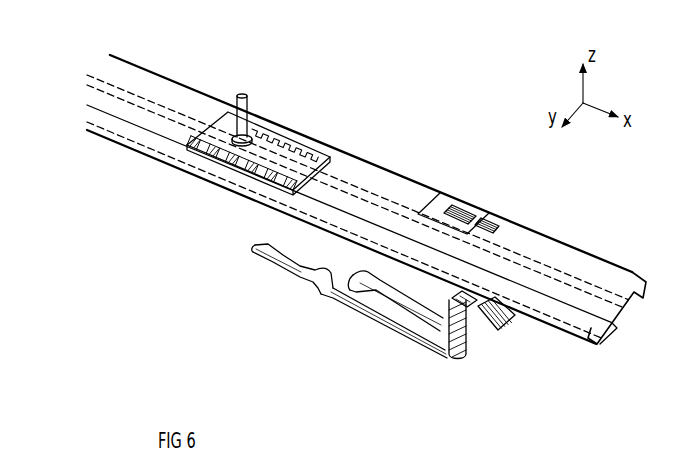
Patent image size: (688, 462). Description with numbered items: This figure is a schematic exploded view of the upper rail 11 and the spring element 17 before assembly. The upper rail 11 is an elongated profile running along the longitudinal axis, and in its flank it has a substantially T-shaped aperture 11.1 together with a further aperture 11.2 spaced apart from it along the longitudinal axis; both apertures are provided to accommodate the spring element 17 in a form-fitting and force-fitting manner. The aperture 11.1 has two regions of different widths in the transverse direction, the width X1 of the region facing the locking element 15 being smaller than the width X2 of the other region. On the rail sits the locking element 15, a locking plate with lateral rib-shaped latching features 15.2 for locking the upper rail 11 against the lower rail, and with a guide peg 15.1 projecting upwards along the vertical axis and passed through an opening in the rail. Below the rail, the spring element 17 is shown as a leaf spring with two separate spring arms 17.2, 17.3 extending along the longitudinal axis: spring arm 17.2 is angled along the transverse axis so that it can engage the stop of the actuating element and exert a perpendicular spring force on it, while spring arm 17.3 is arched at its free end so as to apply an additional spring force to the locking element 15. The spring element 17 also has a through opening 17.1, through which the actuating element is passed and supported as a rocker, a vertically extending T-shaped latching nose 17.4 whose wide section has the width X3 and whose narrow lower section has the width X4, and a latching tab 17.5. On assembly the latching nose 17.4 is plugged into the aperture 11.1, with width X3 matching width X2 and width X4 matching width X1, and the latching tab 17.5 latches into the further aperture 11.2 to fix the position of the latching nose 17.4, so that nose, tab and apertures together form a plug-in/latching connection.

The upper rail 11 is at (608, 276).
The aperture 11.1 is at (460, 207).
The further aperture 11.2 is at (498, 225).
The locking element 15 is at (271, 112).
The guide peg 15.1 is at (243, 93).
The lateral latching features 15.2 is at (324, 150).
The spring element 17 is at (429, 317).
The through opening 17.1 is at (455, 360).
The spring arm 17.2 is at (354, 292).
The spring arm 17.3 is at (292, 284).
The latching nose 17.4 is at (470, 322).
The latching tab 17.5 is at (498, 300).
The width of aperture region facing the locking element X1 is at (420, 212).
The width of other aperture region X2 is at (484, 213).
The width of wide section of latching nose X3 is at (458, 287).
The width of narrow section of latching nose X4 is at (484, 318).